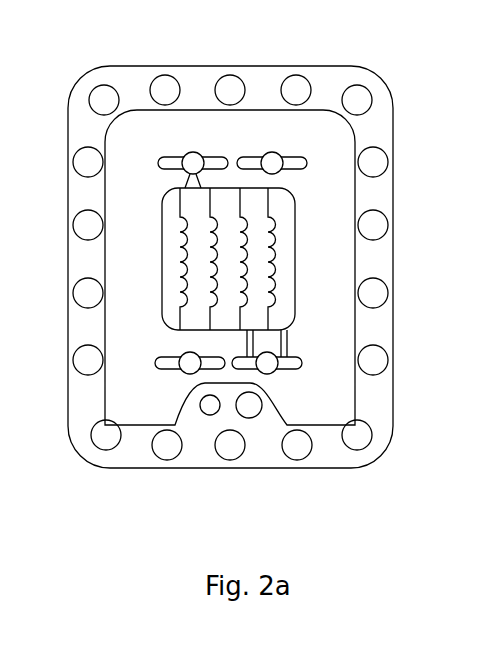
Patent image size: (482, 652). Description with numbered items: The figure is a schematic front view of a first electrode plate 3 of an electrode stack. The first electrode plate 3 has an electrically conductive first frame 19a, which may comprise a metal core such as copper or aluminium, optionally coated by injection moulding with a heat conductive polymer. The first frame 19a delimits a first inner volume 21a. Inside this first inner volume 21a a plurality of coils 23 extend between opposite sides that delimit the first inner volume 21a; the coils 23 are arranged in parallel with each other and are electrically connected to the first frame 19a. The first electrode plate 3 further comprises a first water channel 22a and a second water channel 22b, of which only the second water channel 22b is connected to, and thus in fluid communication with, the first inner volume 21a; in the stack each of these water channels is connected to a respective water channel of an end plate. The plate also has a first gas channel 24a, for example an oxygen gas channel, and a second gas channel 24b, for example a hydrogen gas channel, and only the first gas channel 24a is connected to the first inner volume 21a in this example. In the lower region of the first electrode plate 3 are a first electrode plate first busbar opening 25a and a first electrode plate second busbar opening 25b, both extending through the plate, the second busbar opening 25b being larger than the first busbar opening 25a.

The first electrode plate 3 is at (84, 27).
The first frame 19a is at (330, 138).
The first inner volume 21a is at (158, 255).
The first water channel 22a is at (168, 363).
The second water channel 22b is at (302, 364).
The coils 23 is at (282, 257).
The first gas channel 24a is at (160, 163).
The second gas channel 24b is at (303, 160).
The first electrode plate first busbar opening 25a is at (205, 415).
The first electrode plate second busbar opening 25b is at (255, 417).